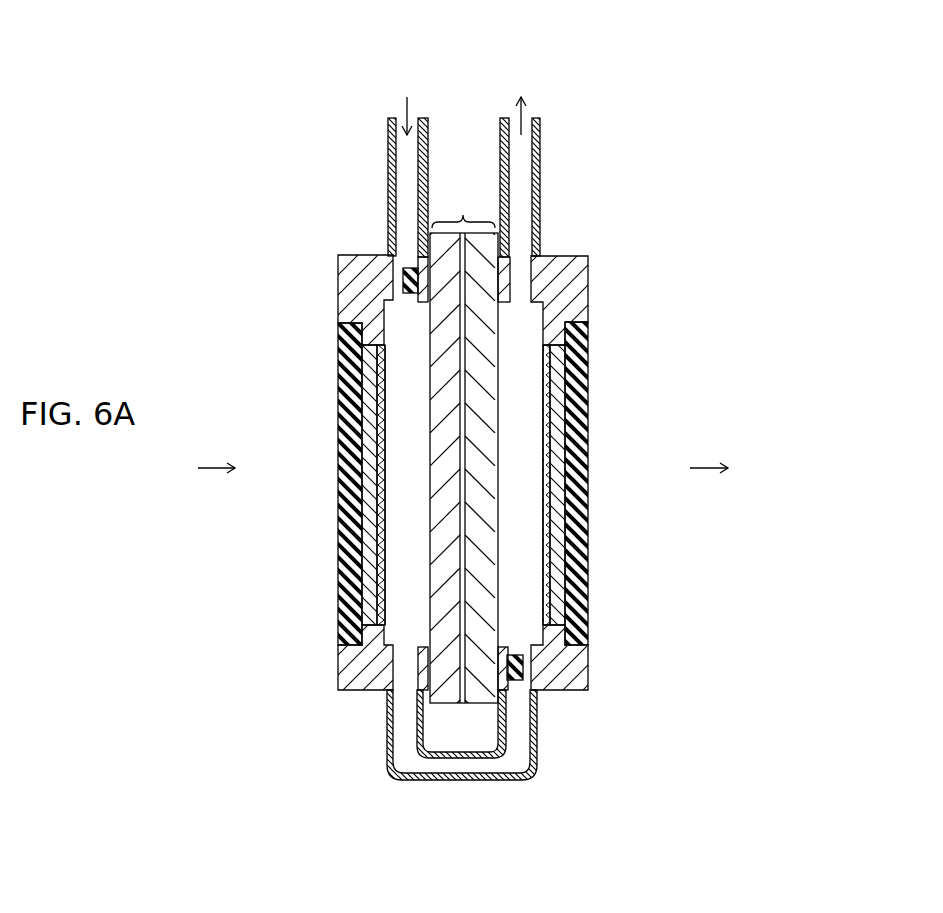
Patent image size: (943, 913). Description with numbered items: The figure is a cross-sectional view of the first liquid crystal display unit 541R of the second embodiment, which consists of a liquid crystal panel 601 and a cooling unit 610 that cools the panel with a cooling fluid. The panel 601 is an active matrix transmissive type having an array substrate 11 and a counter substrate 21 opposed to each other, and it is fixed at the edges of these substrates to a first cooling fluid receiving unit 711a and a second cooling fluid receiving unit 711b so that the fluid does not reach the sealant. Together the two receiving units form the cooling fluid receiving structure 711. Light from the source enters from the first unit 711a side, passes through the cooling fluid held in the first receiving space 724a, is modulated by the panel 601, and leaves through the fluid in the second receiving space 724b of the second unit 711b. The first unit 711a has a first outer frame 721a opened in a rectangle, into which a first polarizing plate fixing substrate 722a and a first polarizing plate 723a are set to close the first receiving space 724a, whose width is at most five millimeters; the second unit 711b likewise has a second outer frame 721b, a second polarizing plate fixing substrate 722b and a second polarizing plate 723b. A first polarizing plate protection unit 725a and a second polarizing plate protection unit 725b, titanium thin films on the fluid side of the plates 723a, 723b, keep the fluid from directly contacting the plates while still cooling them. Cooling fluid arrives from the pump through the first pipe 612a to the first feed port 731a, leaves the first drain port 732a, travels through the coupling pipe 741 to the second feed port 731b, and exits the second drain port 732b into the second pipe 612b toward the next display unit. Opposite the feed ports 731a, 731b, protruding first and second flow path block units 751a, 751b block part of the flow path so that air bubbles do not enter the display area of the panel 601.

The first liquid crystal display unit 541R is at (432, 36).
The liquid crystal panel 601 is at (463, 212).
The cooling unit 610 is at (566, 236).
The first pipe 612a is at (388, 146).
The second pipe 612b is at (540, 146).
The array substrate 11 is at (433, 380).
The counter substrate 21 is at (490, 378).
The cooling pipe 711 is at (461, 795).
The first cooling fluid receiving unit 711a is at (363, 697).
The second cooling fluid receiving unit 711b is at (561, 770).
The coupling pipe 741 is at (465, 781).
The first outer frame 721a is at (326, 465).
The second outer frame 721b is at (606, 473).
The first polarizing plate fixing substrate 722a is at (338, 478).
The second polarizing plate fixing substrate 722b is at (587, 477).
The first polarizing plate 723a is at (358, 448).
The second polarizing plate 723b is at (550, 447).
The first receiving space 724a is at (400, 417).
The second receiving space 724b is at (525, 413).
The first polarizing plate protection unit 725a is at (380, 537).
The second polarizing plate protection unit 725b is at (545, 535).
The first feed port 731a is at (393, 247).
The second feed port 731b is at (542, 642).
The first drain port 732a is at (390, 673).
The second drain port 732b is at (549, 282).
The first flow path block unit 751a is at (404, 280).
The second flow path block unit 751b is at (525, 668).